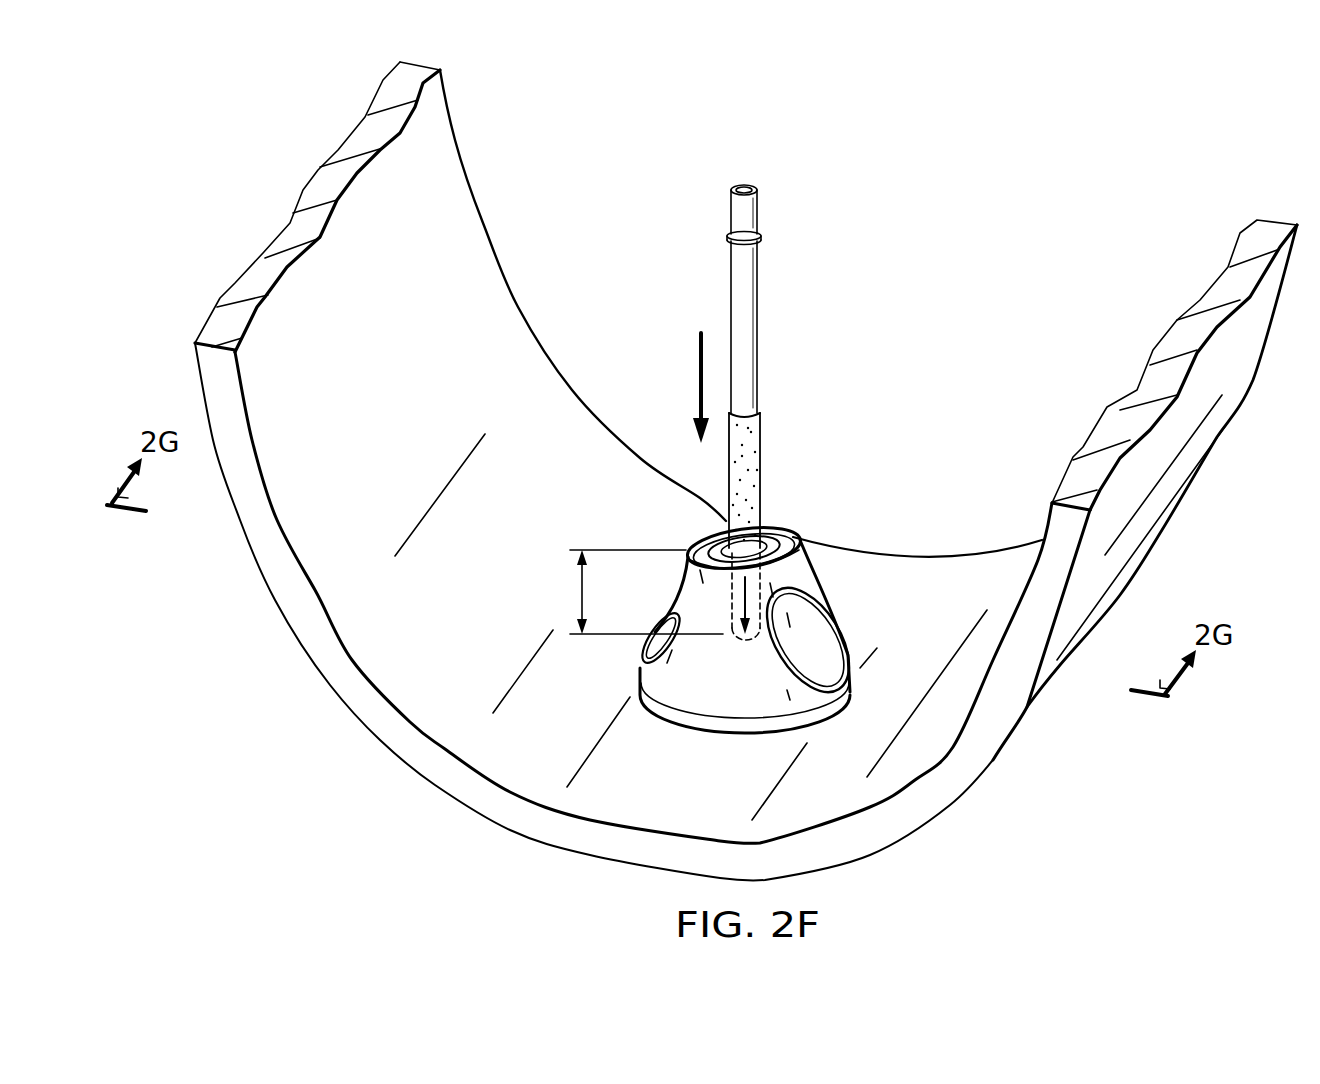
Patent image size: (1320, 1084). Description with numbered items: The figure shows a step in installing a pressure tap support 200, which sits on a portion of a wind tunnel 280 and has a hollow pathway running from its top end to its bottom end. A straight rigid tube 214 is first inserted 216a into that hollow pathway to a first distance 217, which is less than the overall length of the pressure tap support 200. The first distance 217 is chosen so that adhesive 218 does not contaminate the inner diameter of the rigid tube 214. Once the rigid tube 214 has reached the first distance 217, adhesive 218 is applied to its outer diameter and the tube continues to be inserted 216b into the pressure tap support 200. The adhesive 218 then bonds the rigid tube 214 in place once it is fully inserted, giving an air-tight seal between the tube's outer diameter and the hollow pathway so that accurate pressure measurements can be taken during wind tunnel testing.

The pressure tap support 200 is at (840, 570).
The rigid tube 214 is at (783, 338).
The first insertion of the rigid tube 216a is at (763, 600).
The continued insertion of the rigid tube 216b is at (700, 364).
The first distance 217 is at (582, 592).
The adhesive 218 is at (770, 545).
The tire tread strip 280 is at (1065, 746).